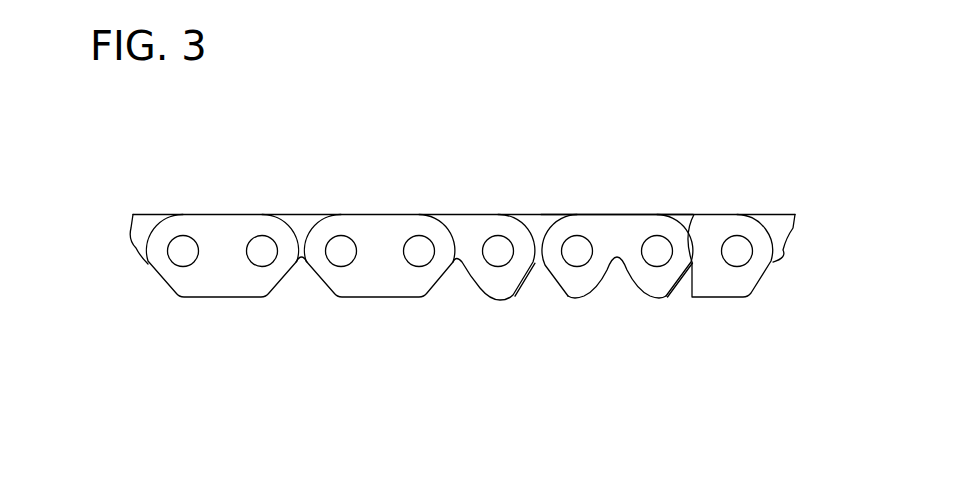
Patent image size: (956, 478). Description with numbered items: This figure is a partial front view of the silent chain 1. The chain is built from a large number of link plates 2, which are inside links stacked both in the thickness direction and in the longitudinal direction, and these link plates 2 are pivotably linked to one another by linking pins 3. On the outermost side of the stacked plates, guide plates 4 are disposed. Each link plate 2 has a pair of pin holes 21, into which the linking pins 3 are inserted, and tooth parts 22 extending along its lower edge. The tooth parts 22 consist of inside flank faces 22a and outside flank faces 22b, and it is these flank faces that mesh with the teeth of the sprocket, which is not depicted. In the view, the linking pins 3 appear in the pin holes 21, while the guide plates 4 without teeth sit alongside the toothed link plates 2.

The silent chain 1 is at (484, 376).
The link plate 2 is at (577, 222).
The linking pin 3 is at (172, 265).
The guide plate 4 is at (228, 290).
The pin hole 21 is at (596, 246).
The tooth part 22 is at (588, 290).
The inside flank face 22a is at (478, 281).
The outside flank face 22b is at (687, 296).